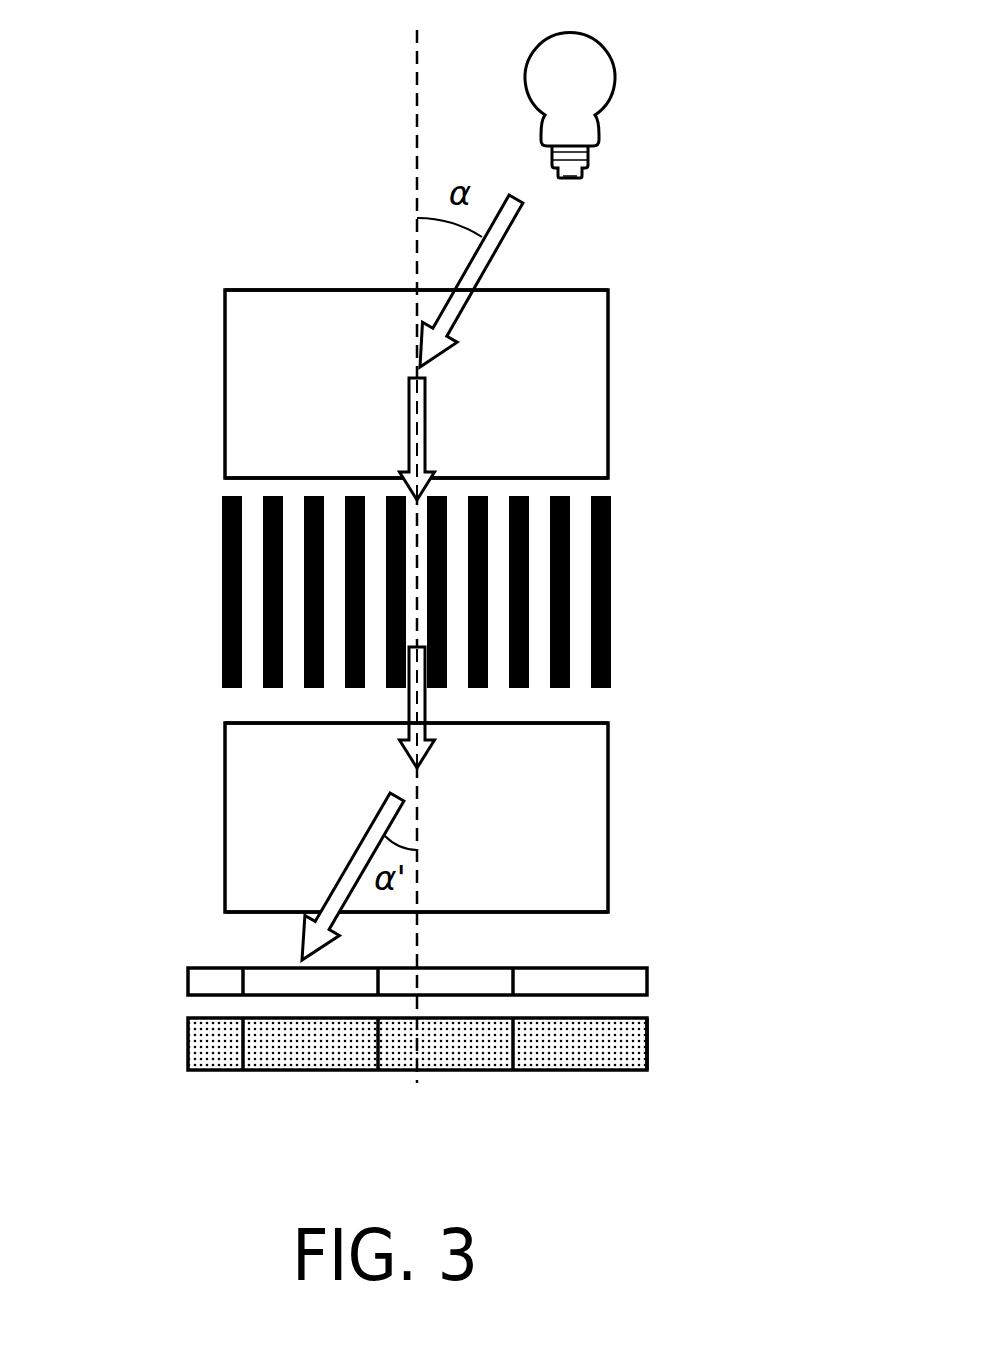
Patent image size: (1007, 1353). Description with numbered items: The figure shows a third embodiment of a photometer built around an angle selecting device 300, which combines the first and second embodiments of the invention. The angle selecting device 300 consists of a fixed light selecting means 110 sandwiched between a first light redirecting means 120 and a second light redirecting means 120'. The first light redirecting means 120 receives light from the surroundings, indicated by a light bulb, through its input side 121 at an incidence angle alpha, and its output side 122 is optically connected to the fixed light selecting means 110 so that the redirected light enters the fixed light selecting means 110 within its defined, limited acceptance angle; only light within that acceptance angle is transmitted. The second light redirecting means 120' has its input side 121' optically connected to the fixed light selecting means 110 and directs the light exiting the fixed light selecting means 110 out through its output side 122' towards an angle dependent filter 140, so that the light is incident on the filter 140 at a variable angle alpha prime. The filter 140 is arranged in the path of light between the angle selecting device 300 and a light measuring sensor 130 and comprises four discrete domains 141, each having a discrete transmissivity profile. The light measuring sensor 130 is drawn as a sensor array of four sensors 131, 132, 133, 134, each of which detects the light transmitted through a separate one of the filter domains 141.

The angle selecting device 300 is at (152, 285).
The first light redirecting means 120 is at (465, 384).
The input side 121 is at (428, 253).
The output side 122 is at (465, 490).
The fixed light selecting means 110 is at (611, 616).
The second light redirecting means 120' is at (468, 817).
The input side 121' is at (467, 707).
The output side 122' is at (468, 930).
The angle dependent filter 140 is at (680, 975).
The filter domain 141 is at (200, 983).
The light measuring sensor 130 is at (680, 1047).
The sensor 131 is at (215, 1055).
The sensor 132 is at (348, 1055).
The sensor 133 is at (490, 1055).
The sensor 134 is at (633, 1055).